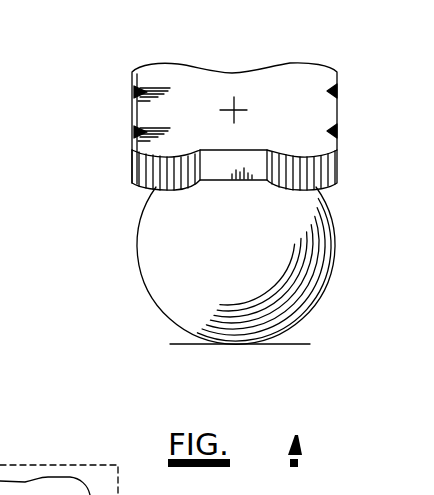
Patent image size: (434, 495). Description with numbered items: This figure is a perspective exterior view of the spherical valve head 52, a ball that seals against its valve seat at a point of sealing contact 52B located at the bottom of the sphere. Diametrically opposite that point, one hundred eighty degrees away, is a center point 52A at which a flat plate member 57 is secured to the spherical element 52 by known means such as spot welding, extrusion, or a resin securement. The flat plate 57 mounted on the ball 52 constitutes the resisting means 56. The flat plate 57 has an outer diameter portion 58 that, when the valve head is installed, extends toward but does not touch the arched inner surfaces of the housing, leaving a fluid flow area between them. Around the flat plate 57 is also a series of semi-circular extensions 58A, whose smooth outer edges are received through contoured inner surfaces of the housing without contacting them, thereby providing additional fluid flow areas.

The resisting means 56 is at (120, 118).
The flat plate member 57 is at (220, 83).
The semi-circular extensions 58A is at (133, 75).
The outer diameter portion 58 is at (238, 153).
The center point 52A is at (134, 142).
The spherical valve head 52 is at (188, 287).
The point of sealing contact 52B is at (237, 345).